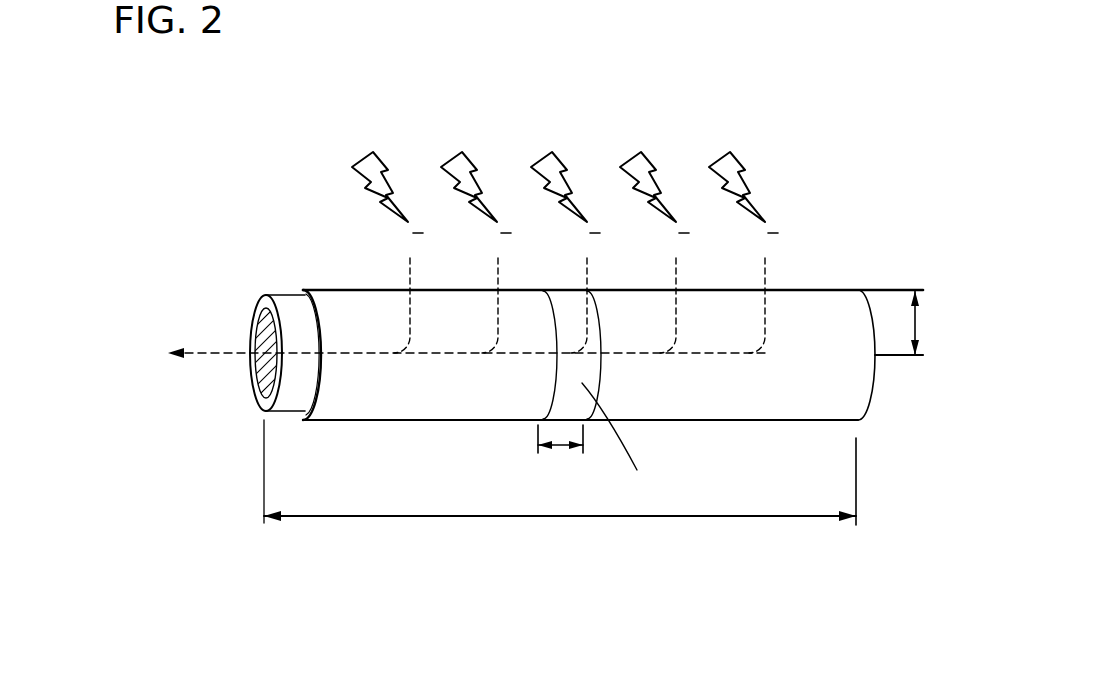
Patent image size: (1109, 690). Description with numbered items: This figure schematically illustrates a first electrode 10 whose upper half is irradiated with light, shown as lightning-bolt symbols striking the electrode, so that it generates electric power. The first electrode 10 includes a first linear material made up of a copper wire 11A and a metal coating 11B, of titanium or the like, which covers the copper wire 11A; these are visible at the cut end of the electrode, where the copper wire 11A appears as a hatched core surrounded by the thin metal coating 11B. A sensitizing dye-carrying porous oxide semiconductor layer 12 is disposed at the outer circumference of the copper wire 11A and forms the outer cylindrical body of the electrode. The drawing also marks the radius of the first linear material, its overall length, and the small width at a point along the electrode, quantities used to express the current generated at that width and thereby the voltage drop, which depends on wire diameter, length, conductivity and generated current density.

The first electrode 10 is at (198, 244).
The copper wire 11A is at (255, 327).
The metal coating 11B is at (259, 299).
The porous oxide semiconductor layer 12 is at (820, 307).